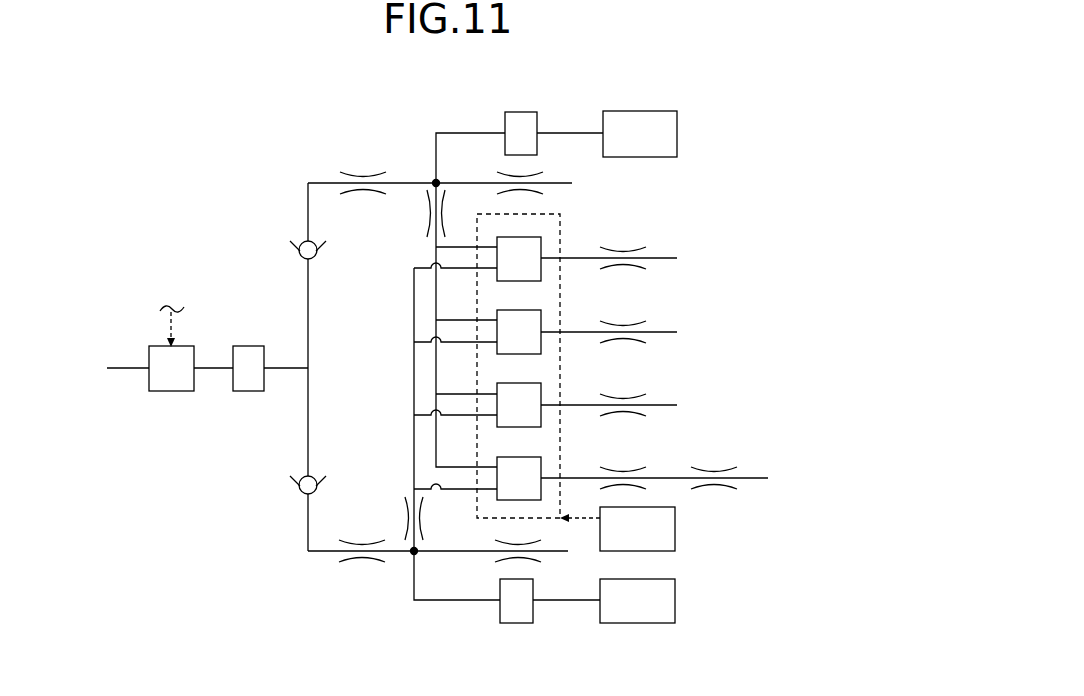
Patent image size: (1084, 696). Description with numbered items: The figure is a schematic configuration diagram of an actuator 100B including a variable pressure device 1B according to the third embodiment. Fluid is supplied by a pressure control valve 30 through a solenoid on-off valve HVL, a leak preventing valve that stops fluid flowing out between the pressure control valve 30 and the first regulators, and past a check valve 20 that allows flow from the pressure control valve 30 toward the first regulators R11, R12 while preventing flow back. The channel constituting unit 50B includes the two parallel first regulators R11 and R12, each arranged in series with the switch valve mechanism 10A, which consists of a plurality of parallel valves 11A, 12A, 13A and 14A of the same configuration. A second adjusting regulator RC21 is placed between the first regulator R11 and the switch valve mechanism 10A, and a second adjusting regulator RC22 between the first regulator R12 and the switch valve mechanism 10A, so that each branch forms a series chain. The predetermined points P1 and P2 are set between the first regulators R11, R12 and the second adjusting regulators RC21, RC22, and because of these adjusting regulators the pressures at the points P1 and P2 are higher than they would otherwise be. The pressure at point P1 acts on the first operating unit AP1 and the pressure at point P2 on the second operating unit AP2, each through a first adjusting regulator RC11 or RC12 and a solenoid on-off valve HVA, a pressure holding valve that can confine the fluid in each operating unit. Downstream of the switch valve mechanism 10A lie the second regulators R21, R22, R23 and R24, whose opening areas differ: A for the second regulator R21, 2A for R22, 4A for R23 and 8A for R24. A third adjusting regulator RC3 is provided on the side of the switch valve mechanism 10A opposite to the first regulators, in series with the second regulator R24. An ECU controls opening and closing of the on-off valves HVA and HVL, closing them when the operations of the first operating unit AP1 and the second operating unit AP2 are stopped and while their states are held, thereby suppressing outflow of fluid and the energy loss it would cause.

The variable pressure device 1B is at (362, 114).
The actuator 100B is at (685, 97).
The channel constituting unit 50B is at (590, 239).
The pressure control valve 30 is at (165, 346).
The solenoid on-off valve HVL is at (250, 346).
The check valve 20 is at (302, 243).
The predetermined point P1 is at (426, 160).
The predetermined point P2 is at (412, 556).
The first regulator R11 is at (355, 172).
The first regulator R12 is at (348, 563).
The second adjusting regulator RC21 is at (425, 215).
The second adjusting regulator RC22 is at (402, 512).
The first adjusting regulator RC11 is at (534, 178).
The first adjusting regulator RC12 is at (540, 561).
The third adjusting regulator RC3 is at (732, 467).
The solenoid on-off valve HVA is at (518, 112).
The first operating unit AP1 is at (640, 134).
The second operating unit AP2 is at (637, 601).
The element ECU is at (617, 529).
The switch valve mechanism 10A is at (478, 214).
The valve 11A is at (543, 247).
The valve 12A is at (497, 312).
The valve 13A is at (497, 386).
The valve 14A is at (497, 460).
The opening area A is at (609, 243).
The opening area 2A is at (609, 316).
The opening area 4A is at (609, 390).
The opening area 8A is at (654, 463).
The second regulator R21 is at (642, 247).
The second regulator R22 is at (642, 321).
The second regulator R23 is at (642, 394).
The second regulator R24 is at (642, 467).